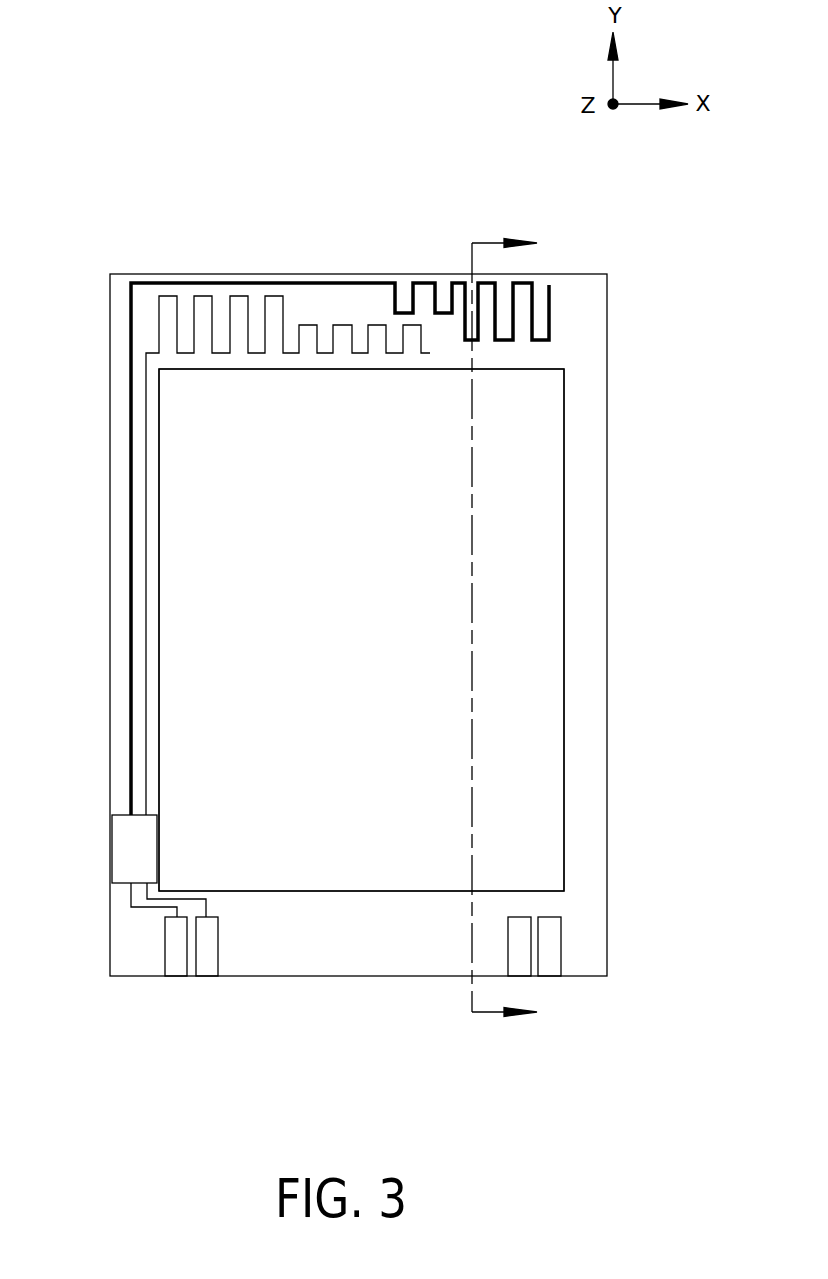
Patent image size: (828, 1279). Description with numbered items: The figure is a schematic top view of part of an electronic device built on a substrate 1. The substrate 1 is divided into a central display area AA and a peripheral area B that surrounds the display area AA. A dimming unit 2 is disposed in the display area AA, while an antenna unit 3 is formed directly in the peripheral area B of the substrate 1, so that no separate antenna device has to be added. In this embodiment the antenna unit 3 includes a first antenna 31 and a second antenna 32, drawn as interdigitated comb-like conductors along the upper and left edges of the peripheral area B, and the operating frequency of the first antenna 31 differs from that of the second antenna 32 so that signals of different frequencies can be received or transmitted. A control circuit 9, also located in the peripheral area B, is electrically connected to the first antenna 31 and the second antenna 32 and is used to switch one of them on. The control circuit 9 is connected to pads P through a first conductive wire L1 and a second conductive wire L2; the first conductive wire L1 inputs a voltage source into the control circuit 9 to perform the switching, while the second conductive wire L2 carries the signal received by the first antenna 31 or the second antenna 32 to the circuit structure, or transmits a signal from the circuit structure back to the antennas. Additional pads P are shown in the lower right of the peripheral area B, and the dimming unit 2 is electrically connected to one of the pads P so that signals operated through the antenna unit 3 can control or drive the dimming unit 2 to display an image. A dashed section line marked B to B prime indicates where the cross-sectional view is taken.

The substrate 1 is at (608, 803).
The dimming unit 2 is at (565, 481).
The antenna unit 3 is at (289, 549).
The first antenna 31 is at (131, 431).
The second antenna 32 is at (65, 407).
The control circuit 9 is at (120, 849).
The first conductive wire L1 is at (166, 915).
The second conductive wire L2 is at (206, 910).
The pads P is at (176, 963).
The display area AA is at (542, 723).
The peripheral area B is at (590, 562).